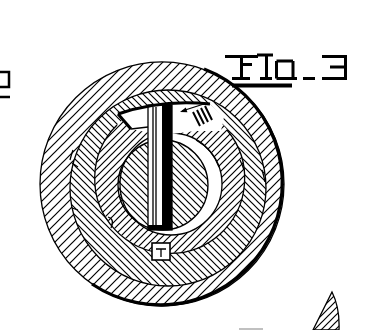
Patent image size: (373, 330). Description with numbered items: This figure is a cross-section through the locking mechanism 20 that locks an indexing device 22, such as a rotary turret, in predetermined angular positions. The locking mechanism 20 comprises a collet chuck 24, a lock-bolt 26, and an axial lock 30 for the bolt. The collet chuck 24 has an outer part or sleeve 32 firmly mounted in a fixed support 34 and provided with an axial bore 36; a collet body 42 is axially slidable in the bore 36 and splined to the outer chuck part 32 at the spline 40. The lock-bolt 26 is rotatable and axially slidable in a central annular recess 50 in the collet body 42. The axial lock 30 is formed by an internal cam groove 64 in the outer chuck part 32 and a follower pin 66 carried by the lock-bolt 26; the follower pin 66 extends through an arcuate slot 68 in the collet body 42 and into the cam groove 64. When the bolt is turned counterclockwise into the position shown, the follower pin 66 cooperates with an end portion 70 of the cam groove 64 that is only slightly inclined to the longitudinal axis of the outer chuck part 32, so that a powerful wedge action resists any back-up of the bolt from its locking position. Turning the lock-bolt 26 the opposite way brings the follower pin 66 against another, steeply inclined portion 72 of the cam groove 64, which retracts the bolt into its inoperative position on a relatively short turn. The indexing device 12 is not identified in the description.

The rotary device 12 is at (251, 328).
The locking mechanism 20 is at (88, 224).
The indexing device 22 is at (311, 316).
The collet chuck 24 is at (125, 241).
The lock-bolt 26 is at (123, 185).
The axial lock 30 is at (197, 78).
The outer chuck part 32 is at (220, 246).
The fixed support 34 is at (246, 161).
The axial bore 36 is at (84, 232).
The spline 40 is at (165, 262).
The collet body 42 is at (203, 223).
The central annular recess 50 is at (72, 166).
The internal cam groove 64 is at (216, 137).
The follower pin 66 is at (127, 110).
The arcuate slot 68 is at (206, 155).
The end portion of the cam groove 70 is at (149, 104).
The steep portion of the cam groove 72 is at (248, 175).